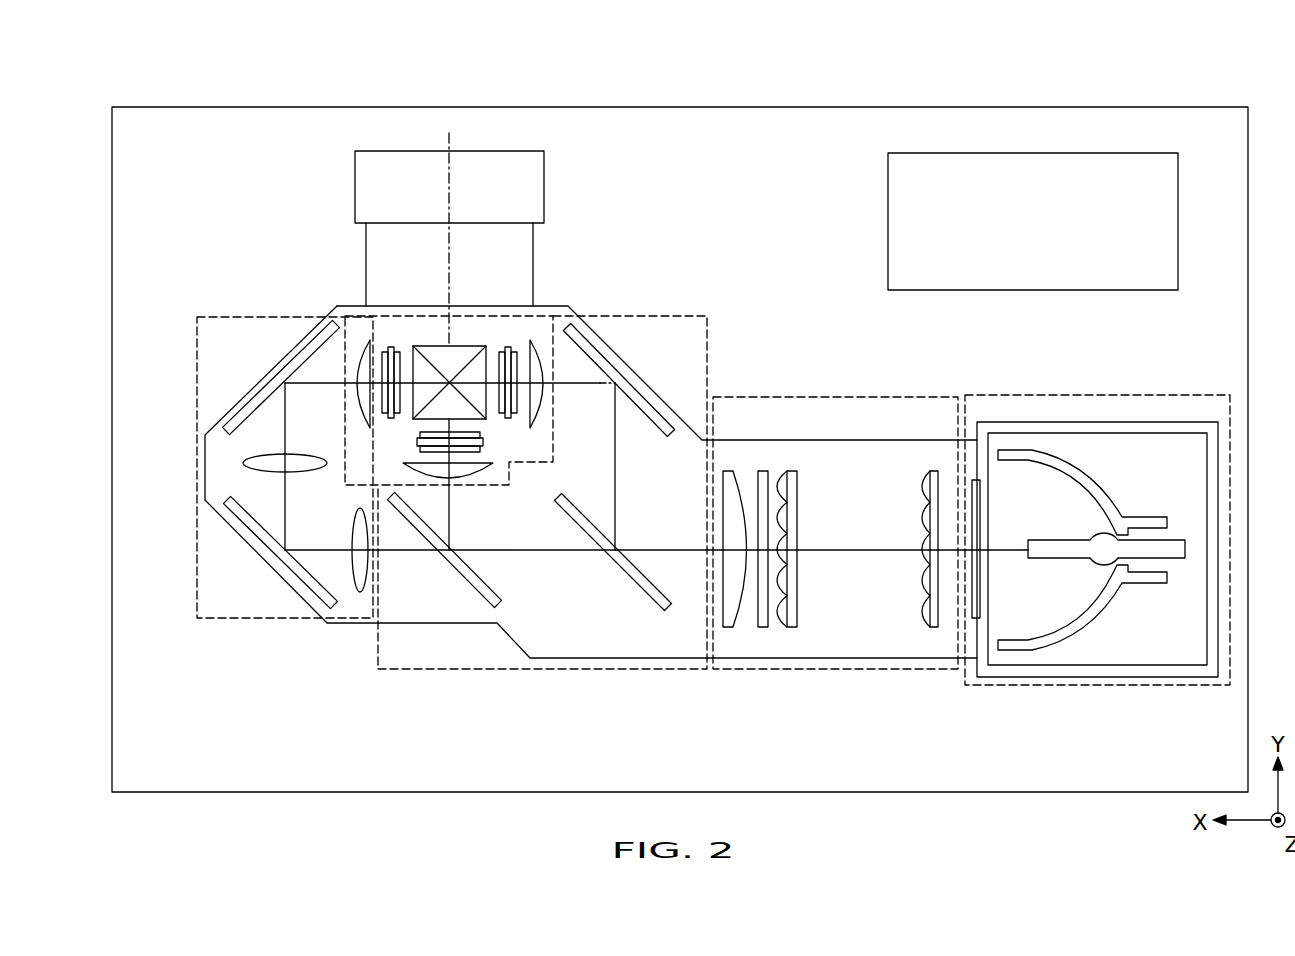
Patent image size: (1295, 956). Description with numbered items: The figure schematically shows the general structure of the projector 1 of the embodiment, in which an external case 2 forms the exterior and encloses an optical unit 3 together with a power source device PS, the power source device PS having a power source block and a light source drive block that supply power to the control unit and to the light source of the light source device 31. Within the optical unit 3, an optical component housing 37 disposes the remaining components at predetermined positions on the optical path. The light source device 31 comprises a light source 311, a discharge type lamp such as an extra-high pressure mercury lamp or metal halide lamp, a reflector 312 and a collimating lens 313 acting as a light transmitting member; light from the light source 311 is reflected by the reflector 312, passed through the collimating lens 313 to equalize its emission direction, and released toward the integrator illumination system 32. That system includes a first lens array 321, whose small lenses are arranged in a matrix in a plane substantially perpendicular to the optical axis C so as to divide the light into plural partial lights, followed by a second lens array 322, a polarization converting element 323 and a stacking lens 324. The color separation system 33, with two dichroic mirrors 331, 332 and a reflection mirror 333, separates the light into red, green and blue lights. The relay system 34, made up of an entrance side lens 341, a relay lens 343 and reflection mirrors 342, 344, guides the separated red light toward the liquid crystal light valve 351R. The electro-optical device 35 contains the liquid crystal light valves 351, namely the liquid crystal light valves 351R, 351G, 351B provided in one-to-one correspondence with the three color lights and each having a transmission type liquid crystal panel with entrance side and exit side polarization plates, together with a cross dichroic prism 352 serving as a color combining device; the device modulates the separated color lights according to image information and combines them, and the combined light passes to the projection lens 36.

The projector 1 is at (750, 94).
The external case 2 is at (112, 278).
The optical unit 3 is at (690, 191).
The power source device PS is at (895, 218).
The light source device 31 is at (1005, 686).
The light source 311 is at (1068, 553).
The reflector 312 is at (1103, 598).
The collimating lens 313 is at (968, 598).
The integrator illumination system 32 is at (762, 670).
The first lens array 321 is at (935, 470).
The second lens array 322 is at (787, 473).
The polarization converting element 323 is at (768, 473).
The stacking lens 324 is at (733, 473).
The optical axis C is at (850, 548).
The color separation system 33 is at (626, 670).
The dichroic mirror 331 is at (643, 587).
The dichroic mirror 332 is at (477, 588).
The reflection mirror 333 is at (637, 397).
The relay system 34 is at (197, 462).
The entrance side lens 341 is at (358, 577).
The reflection mirror 342 is at (222, 493).
The relay lens 343 is at (293, 463).
The reflection mirror 344 is at (263, 398).
The electro-optical device 35 is at (461, 331).
The liquid crystal light valves 351 is at (448, 390).
The liquid crystal light valve for R light 351R is at (390, 353).
The liquid crystal light valve for G light 351G is at (485, 445).
The liquid crystal light valve for B light 351B is at (508, 350).
The cross dichroic prism 352 is at (467, 355).
The projection lens 36 is at (530, 182).
The optical component housing 37 is at (681, 658).